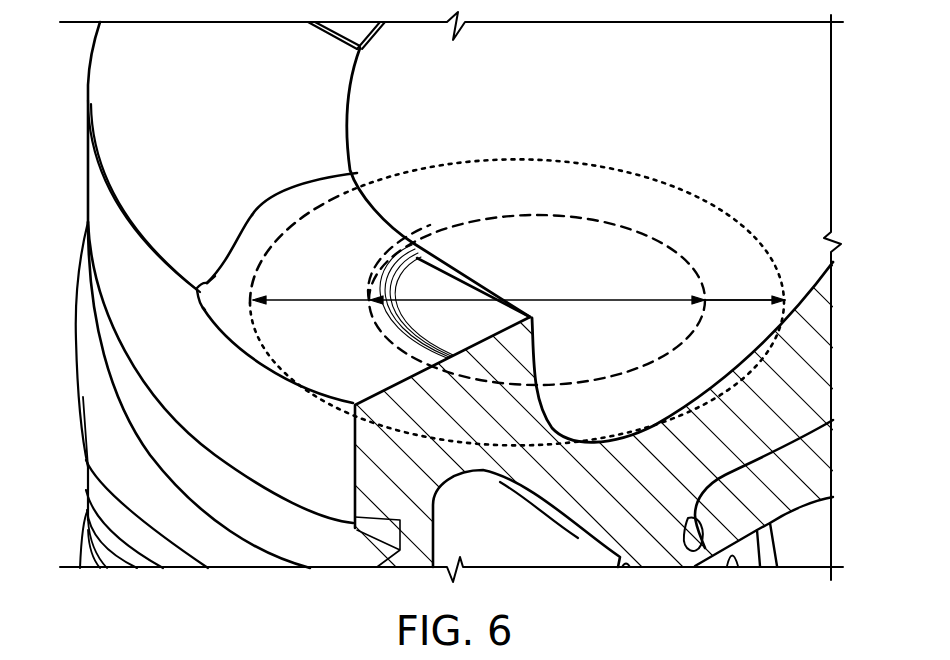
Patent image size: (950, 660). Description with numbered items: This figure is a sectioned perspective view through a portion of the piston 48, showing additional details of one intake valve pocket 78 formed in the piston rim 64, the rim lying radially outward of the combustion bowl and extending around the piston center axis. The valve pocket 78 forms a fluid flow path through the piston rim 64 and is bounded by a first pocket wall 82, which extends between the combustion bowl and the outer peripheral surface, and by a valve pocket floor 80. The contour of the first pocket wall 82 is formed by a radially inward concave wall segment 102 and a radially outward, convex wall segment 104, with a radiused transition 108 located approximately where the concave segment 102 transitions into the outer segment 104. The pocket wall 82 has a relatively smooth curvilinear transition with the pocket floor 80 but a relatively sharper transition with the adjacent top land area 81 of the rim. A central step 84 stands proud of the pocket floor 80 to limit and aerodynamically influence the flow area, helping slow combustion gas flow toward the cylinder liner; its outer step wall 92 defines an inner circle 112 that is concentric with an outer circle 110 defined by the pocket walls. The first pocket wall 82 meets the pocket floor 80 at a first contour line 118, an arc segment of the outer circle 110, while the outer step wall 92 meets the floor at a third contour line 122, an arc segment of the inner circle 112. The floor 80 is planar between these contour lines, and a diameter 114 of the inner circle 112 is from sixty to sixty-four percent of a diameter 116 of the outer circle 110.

The piston 48 is at (855, 73).
The piston rim 64 is at (82, 48).
The valve pocket 78 is at (333, 213).
The valve pocket floor 80 is at (113, 143).
The top land area 81 is at (138, 178).
The first pocket wall 82 is at (240, 237).
The central step 84 is at (445, 297).
The outer step wall 92 is at (397, 333).
The radially inward concave wall segment 102 is at (277, 208).
The radially outward wall segment 104 is at (197, 307).
The radiused transition 108 is at (222, 278).
The outer circle 110 is at (505, 163).
The inner circle 112 is at (493, 215).
The diameter of inner circle 114 is at (557, 298).
The diameter of outer circle 116 is at (728, 297).
The first contour line 118 is at (258, 258).
The third contour line 122 is at (384, 250).